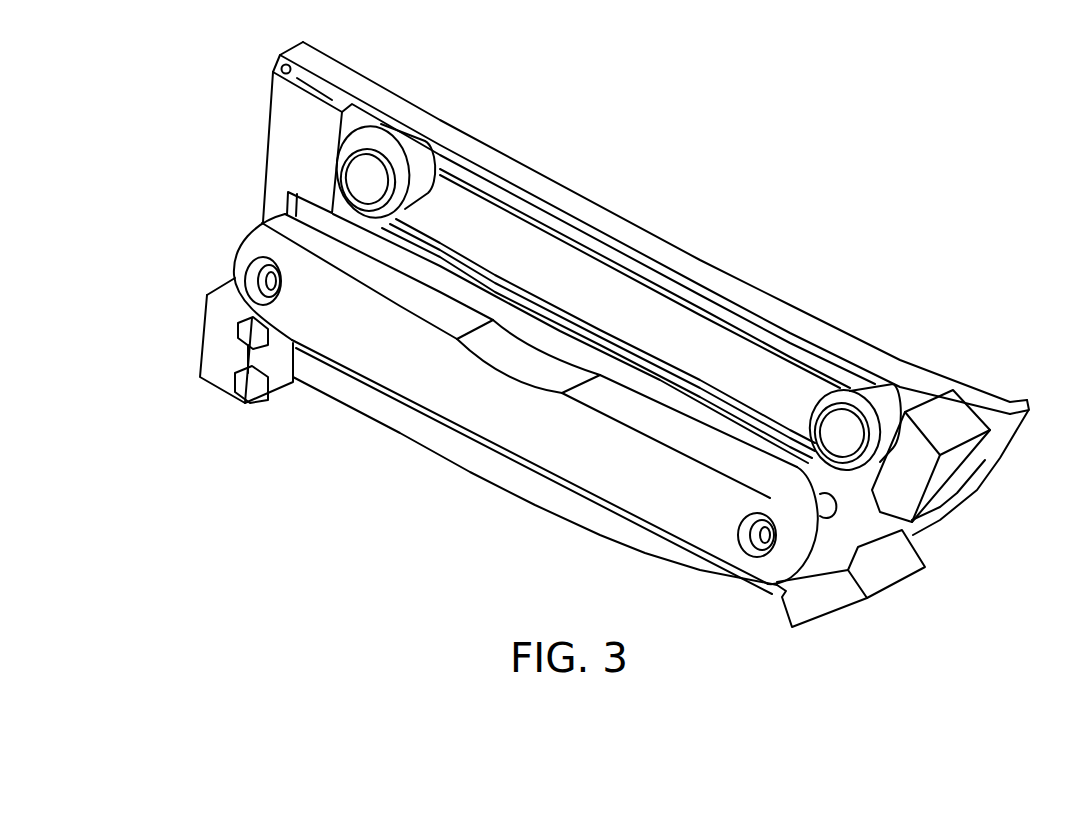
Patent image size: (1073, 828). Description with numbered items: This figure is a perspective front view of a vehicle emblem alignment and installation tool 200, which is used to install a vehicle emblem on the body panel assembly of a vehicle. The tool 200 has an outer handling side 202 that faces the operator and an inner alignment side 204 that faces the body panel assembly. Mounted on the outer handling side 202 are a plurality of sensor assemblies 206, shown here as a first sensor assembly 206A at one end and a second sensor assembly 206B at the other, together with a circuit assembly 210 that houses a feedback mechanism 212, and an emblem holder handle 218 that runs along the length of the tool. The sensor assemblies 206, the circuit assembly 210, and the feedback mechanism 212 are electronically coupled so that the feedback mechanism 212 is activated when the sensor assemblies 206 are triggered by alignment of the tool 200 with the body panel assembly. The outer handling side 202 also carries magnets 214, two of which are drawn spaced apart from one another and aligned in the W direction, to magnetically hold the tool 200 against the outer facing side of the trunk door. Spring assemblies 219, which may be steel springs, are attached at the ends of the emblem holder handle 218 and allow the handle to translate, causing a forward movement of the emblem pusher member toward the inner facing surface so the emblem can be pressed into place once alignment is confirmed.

The vehicle emblem alignment and installation tool 200 is at (972, 196).
The outer handling side 202 is at (443, 437).
The inner alignment side 204 is at (807, 306).
The sensor assemblies 206 is at (913, 580).
The first sensor assembly 206A is at (963, 480).
The second sensor assembly 206B is at (213, 387).
The circuit assembly 210 is at (266, 144).
The feedback mechanism 212 is at (281, 71).
The magnets 214 is at (367, 180).
The emblem holder handle 218 is at (568, 460).
The spring assemblies 219 is at (262, 280).